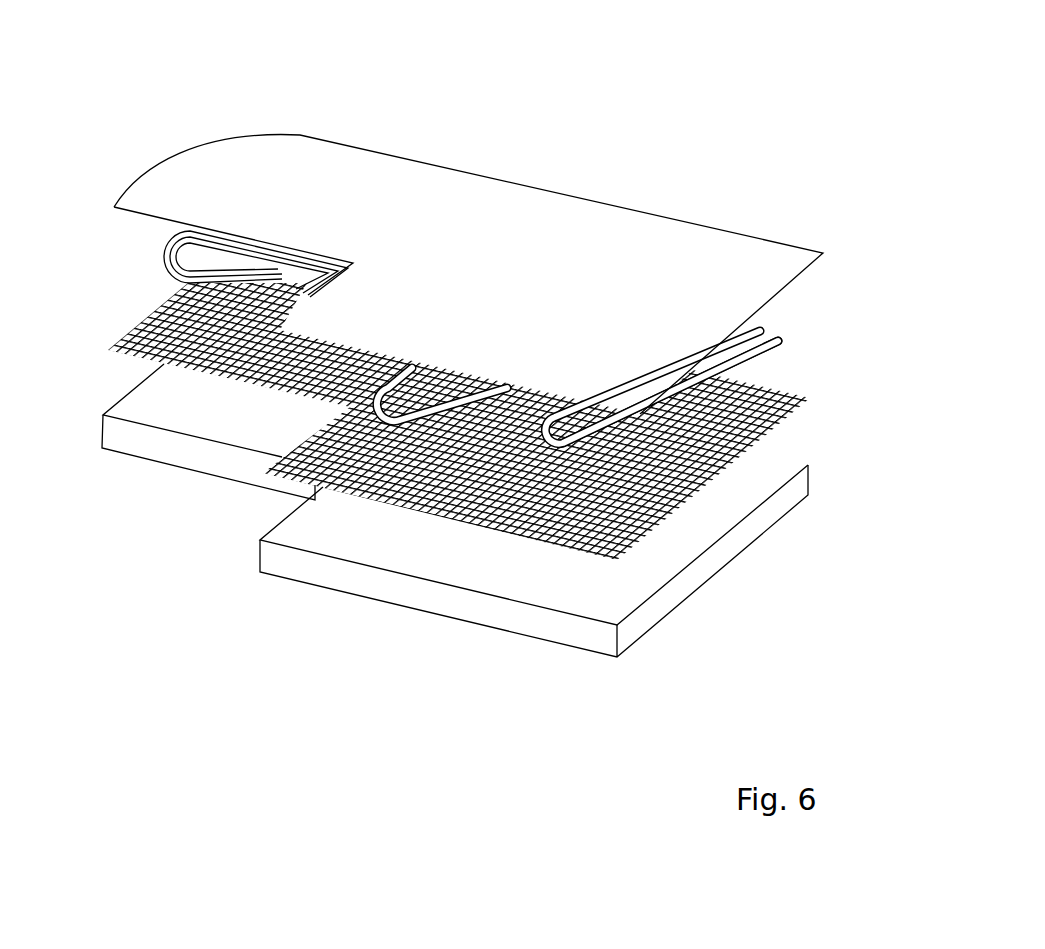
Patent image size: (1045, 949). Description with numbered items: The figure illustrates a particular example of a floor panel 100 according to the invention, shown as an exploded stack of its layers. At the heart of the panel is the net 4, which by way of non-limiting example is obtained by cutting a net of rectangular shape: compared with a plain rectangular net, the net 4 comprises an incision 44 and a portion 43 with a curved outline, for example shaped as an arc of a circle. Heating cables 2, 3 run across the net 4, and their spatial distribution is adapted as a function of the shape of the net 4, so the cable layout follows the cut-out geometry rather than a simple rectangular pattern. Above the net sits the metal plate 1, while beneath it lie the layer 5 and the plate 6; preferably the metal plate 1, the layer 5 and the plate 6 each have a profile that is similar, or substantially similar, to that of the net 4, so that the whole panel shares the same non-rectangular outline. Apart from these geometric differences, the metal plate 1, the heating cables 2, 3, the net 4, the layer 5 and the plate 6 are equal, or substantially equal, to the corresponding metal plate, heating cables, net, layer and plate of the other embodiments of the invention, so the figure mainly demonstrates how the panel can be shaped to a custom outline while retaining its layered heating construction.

The floor panel 100 is at (538, 155).
The metal plate 1 is at (230, 128).
The heating cable 2 is at (750, 367).
The heating cable 3 is at (749, 352).
The net 4 is at (442, 520).
The portion with a curved outline 43 is at (281, 283).
The incision 44 is at (128, 370).
The layer 5 is at (767, 512).
The plate 6 is at (757, 538).